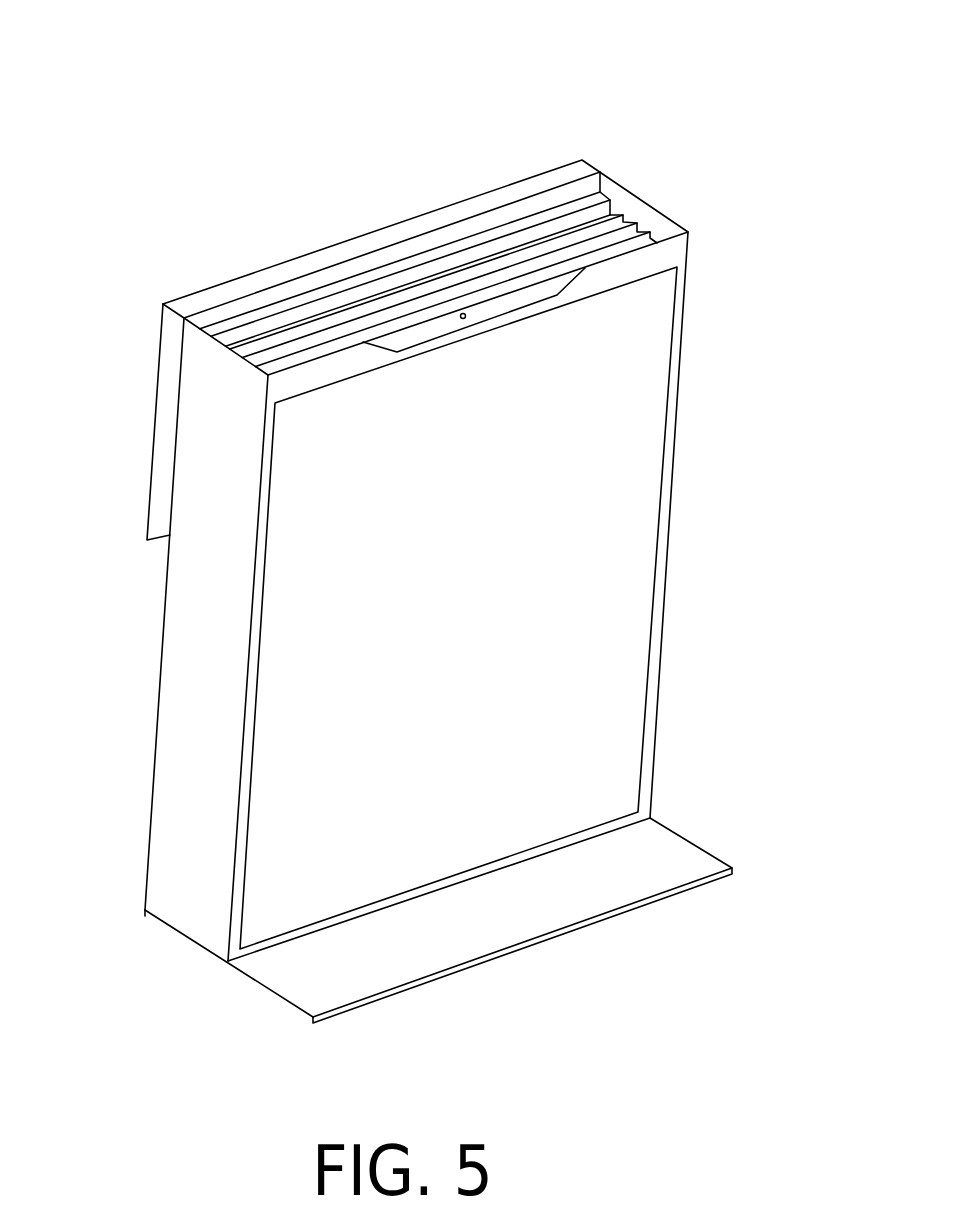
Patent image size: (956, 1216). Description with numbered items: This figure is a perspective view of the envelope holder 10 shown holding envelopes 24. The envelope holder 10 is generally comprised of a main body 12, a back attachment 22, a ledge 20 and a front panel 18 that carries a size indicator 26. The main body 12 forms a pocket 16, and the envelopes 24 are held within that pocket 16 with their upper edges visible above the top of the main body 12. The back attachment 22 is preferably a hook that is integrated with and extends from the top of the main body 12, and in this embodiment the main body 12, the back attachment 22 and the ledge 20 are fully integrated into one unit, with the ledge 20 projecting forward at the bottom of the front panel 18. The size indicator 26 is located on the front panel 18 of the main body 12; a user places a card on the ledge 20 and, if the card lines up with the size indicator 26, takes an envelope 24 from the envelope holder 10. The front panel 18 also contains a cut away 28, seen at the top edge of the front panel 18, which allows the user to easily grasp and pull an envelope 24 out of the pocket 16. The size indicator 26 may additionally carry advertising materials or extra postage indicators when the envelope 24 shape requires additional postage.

The envelope holder 10 is at (451, 518).
The main body 12 is at (371, 588).
The pocket 16 is at (582, 192).
The front panel 18 is at (749, 525).
The ledge 20 is at (493, 899).
The back attachment 22 is at (167, 430).
The envelopes 24 is at (453, 280).
The size indicator 26 is at (541, 608).
The cut away 28 is at (583, 228).